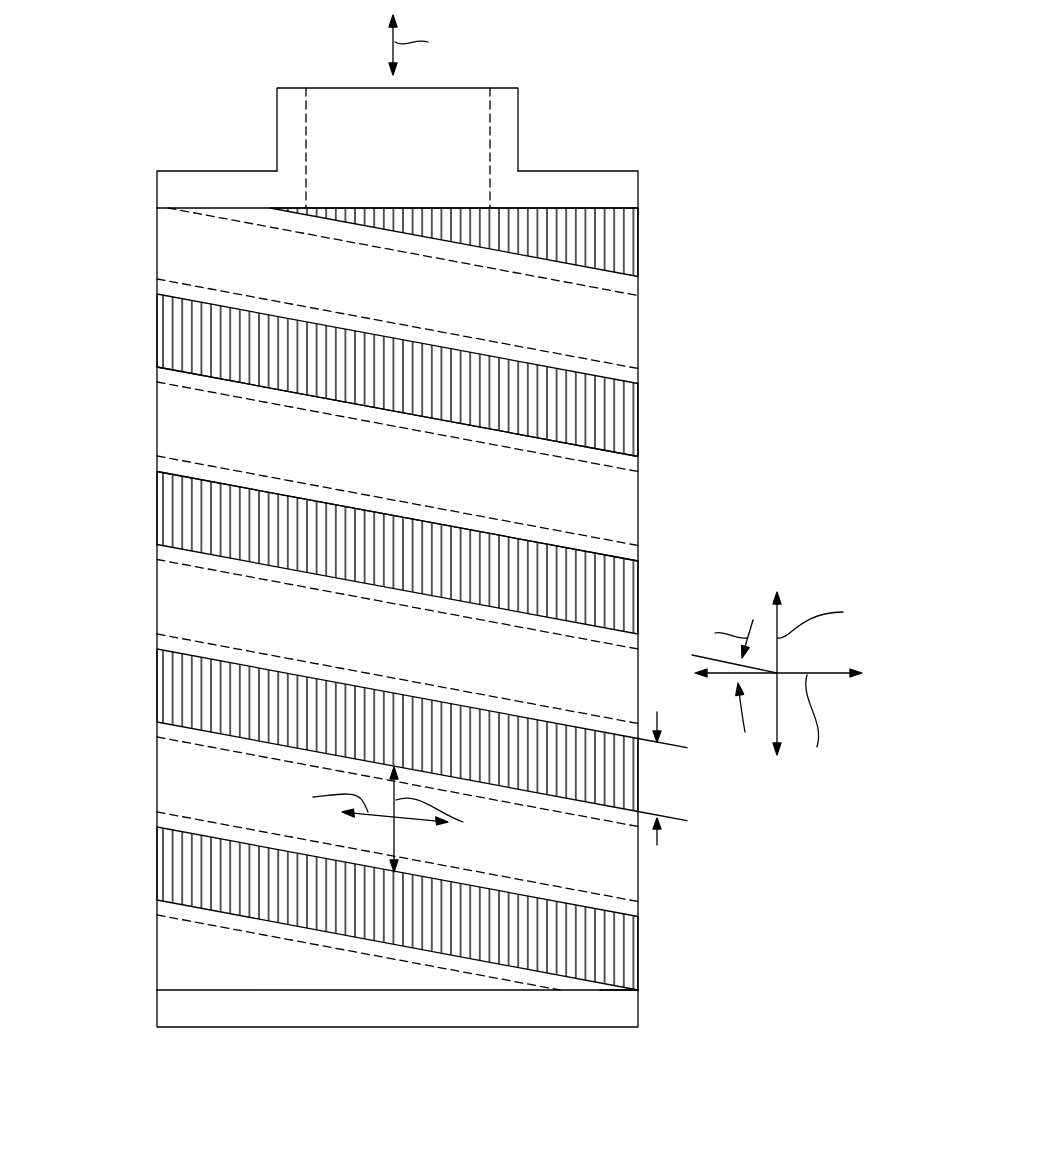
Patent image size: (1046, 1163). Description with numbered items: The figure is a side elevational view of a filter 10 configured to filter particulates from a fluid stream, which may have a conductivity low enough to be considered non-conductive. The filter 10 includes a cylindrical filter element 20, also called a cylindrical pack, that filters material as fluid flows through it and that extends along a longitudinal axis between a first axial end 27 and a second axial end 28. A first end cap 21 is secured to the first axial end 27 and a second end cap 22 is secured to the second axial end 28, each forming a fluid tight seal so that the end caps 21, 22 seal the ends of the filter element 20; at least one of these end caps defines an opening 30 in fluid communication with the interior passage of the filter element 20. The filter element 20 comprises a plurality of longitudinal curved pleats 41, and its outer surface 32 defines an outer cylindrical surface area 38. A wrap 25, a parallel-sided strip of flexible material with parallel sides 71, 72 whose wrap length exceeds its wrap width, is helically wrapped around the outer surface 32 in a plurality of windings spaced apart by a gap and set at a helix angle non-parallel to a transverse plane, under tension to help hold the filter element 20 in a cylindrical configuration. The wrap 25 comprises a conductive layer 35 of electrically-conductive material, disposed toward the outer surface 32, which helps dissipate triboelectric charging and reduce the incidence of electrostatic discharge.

The filter 10 is at (72, 64).
The filter element 20 is at (170, 323).
The first end cap 21 is at (210, 170).
The second end cap 22 is at (203, 1027).
The wrap 25 is at (170, 418).
The first axial end 27 is at (603, 207).
The second axial end 28 is at (632, 992).
The opening 30 is at (328, 80).
The outer surface 32 is at (138, 676).
The conductive layer 35 is at (182, 464).
The outer cylindrical surface area 38 is at (378, 748).
The longitudinal curved pleats 41 is at (602, 592).
The first side of the strip 71 is at (192, 373).
The second side of the strip 72 is at (213, 482).